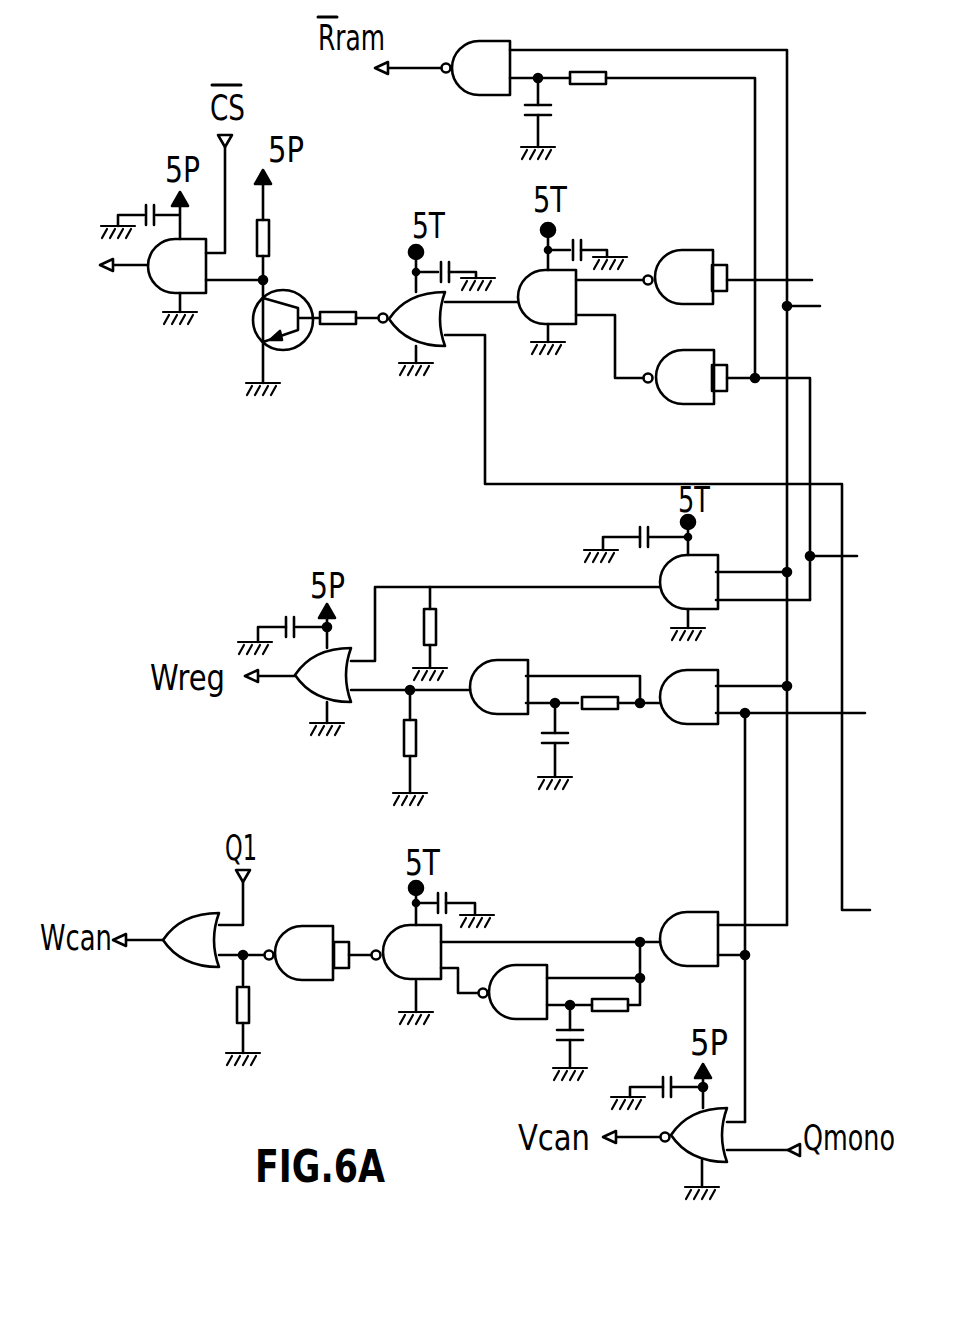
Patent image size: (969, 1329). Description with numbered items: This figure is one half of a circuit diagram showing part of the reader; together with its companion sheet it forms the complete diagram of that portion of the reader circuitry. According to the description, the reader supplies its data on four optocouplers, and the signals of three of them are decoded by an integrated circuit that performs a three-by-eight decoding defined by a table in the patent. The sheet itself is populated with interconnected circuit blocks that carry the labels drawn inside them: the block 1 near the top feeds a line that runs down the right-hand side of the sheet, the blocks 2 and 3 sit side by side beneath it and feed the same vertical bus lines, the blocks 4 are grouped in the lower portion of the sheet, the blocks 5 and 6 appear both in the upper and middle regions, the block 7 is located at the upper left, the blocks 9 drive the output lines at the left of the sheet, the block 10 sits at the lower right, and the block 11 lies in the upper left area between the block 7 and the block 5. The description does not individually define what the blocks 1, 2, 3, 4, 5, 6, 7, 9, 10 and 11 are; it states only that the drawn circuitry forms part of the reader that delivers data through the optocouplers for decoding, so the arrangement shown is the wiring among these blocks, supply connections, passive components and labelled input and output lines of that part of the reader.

The NAND gate 1 is at (476, 68).
The open-collector gate 2 is at (686, 377).
The open-collector gate 3 is at (686, 277).
The NAND gates 4 is at (406, 972).
The AND gates 5 is at (618, 618).
The AND gates 6 is at (594, 639).
The AND gate 7 is at (177, 266).
The NOR gates 9 is at (257, 807).
The NOR gate 10 is at (694, 1135).
The NOR gate 11 is at (412, 319).